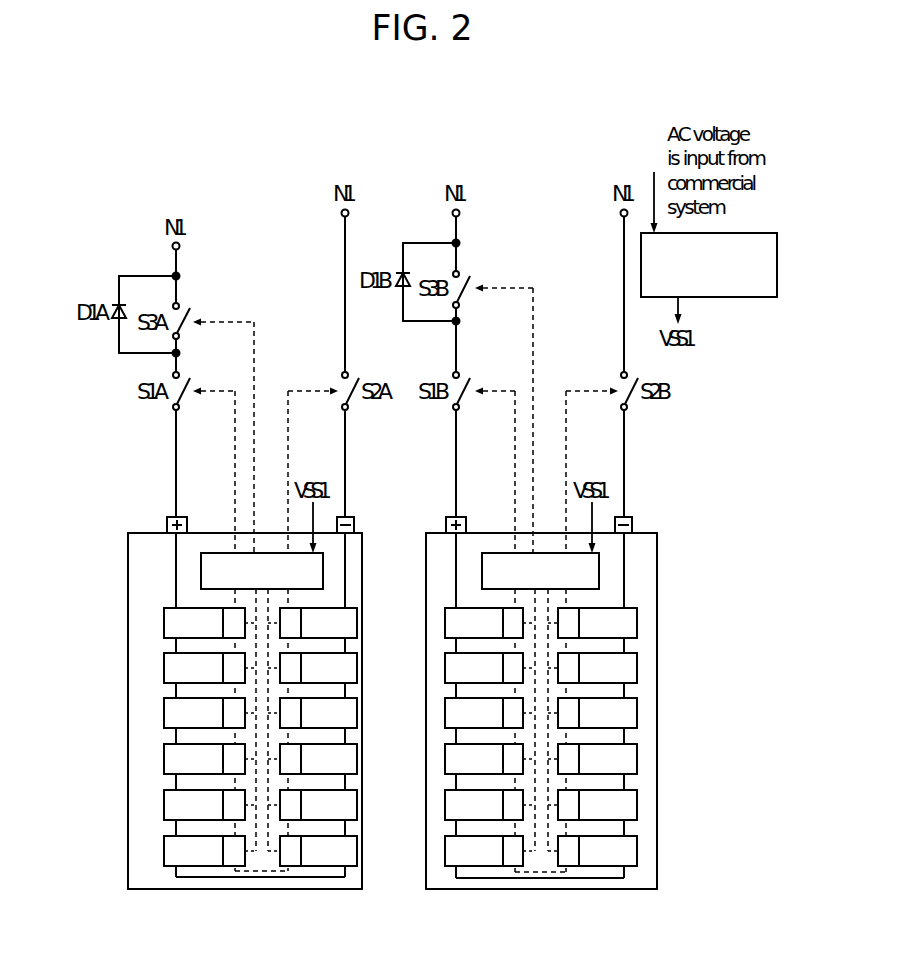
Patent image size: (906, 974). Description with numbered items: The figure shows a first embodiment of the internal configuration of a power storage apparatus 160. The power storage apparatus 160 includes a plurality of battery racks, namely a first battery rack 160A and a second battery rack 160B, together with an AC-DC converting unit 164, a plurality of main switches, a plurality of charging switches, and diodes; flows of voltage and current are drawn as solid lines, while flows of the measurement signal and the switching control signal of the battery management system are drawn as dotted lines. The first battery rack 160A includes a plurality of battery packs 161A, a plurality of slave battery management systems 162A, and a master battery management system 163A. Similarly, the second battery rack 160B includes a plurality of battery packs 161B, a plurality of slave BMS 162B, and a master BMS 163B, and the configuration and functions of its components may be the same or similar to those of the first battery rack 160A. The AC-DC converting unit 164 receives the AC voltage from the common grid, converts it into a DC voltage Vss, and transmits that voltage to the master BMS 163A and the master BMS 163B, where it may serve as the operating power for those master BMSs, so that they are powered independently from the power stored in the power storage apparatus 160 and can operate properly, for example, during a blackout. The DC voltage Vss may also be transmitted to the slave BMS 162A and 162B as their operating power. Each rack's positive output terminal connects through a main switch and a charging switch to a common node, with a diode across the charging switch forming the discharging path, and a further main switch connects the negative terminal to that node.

The power storage apparatus 160 is at (547, 138).
The first battery rack 160A is at (208, 703).
The second battery rack 160B is at (583, 703).
The battery packs 161A is at (164, 623).
The battery packs 161B is at (637, 627).
The slave battery management systems 162A is at (232, 607).
The slave BMS 162B is at (573, 607).
The master battery management system 163A is at (201, 562).
The master BMS 163B is at (599, 565).
The AC-DC converting unit 164 is at (743, 297).